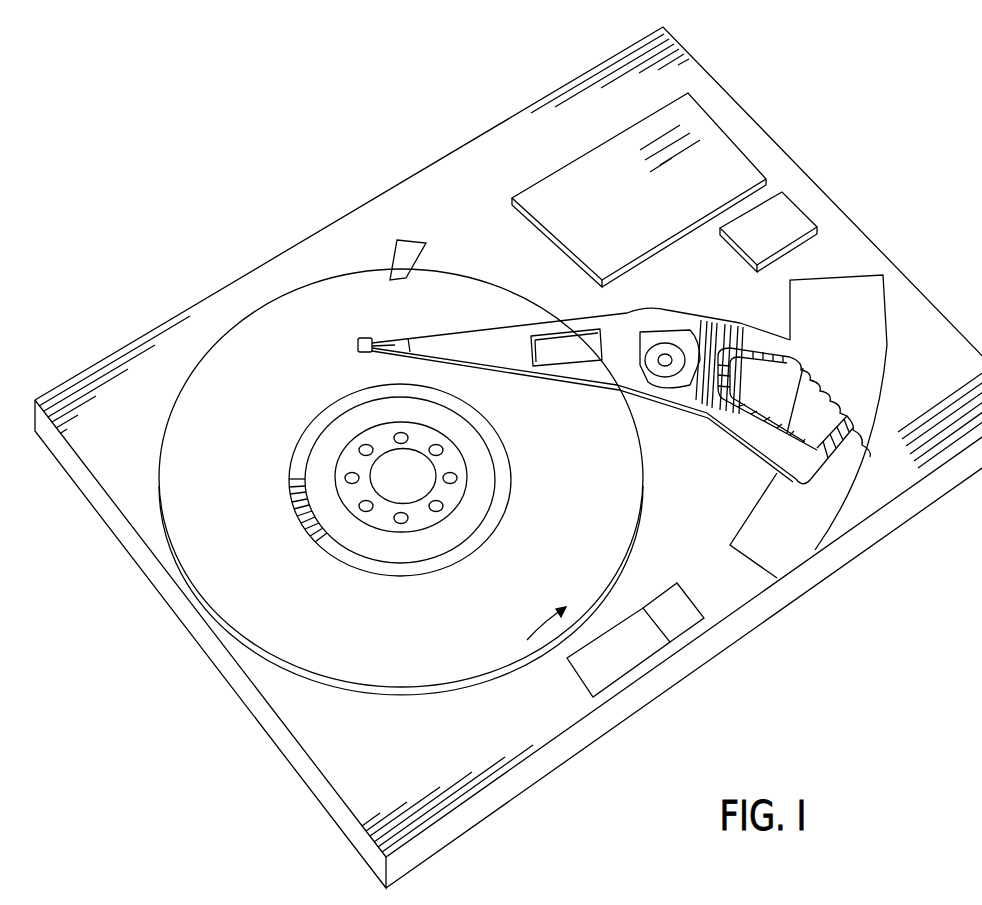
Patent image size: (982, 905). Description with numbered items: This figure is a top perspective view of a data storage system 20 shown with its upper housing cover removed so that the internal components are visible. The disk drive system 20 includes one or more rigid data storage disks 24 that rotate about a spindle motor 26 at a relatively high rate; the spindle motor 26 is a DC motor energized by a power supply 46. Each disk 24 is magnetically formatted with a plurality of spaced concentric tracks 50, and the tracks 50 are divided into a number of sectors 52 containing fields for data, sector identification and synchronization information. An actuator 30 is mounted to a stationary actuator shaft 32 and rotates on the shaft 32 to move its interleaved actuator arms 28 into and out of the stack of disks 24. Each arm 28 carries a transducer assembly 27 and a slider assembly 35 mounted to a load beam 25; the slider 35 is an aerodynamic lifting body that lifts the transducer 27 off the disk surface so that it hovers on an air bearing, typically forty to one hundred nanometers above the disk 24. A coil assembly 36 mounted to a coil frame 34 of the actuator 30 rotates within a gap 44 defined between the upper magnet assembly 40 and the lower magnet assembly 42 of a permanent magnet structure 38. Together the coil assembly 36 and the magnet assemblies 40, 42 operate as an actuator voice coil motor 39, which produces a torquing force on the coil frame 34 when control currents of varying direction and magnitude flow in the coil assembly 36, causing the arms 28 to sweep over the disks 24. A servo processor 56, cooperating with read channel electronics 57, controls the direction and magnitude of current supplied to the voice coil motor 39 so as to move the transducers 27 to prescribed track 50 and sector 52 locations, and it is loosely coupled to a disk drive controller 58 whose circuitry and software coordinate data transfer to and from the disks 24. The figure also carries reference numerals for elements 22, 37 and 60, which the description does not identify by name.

The data storage system 20 is at (838, 148).
The base 22 is at (693, 657).
The data storage disk 24 is at (194, 464).
The load beam 25 is at (383, 349).
The spindle motor 26 is at (420, 500).
The transducer assembly 27 is at (358, 352).
The actuator arm 28 is at (503, 352).
The actuator 30 is at (680, 403).
The actuator shaft 32 is at (665, 352).
The coil frame 34 is at (721, 337).
The slider assembly 35 is at (359, 343).
The coil assembly 36 is at (737, 367).
The arm rotation direction 37 is at (655, 417).
The permanent magnet structure 38 is at (889, 308).
The actuator voice coil motor 39 is at (771, 470).
The upper magnet assembly 40 is at (875, 353).
The lower magnet assembly 42 is at (745, 542).
The gap 44 is at (855, 443).
The power supply 46 is at (583, 225).
The concentric tracks 50 is at (305, 430).
The sectors 52 is at (296, 507).
The servo processor 56 is at (621, 649).
The read channel electronics 57 is at (661, 625).
The disk drive controller 58 is at (756, 237).
The disk shroud 60 is at (416, 240).